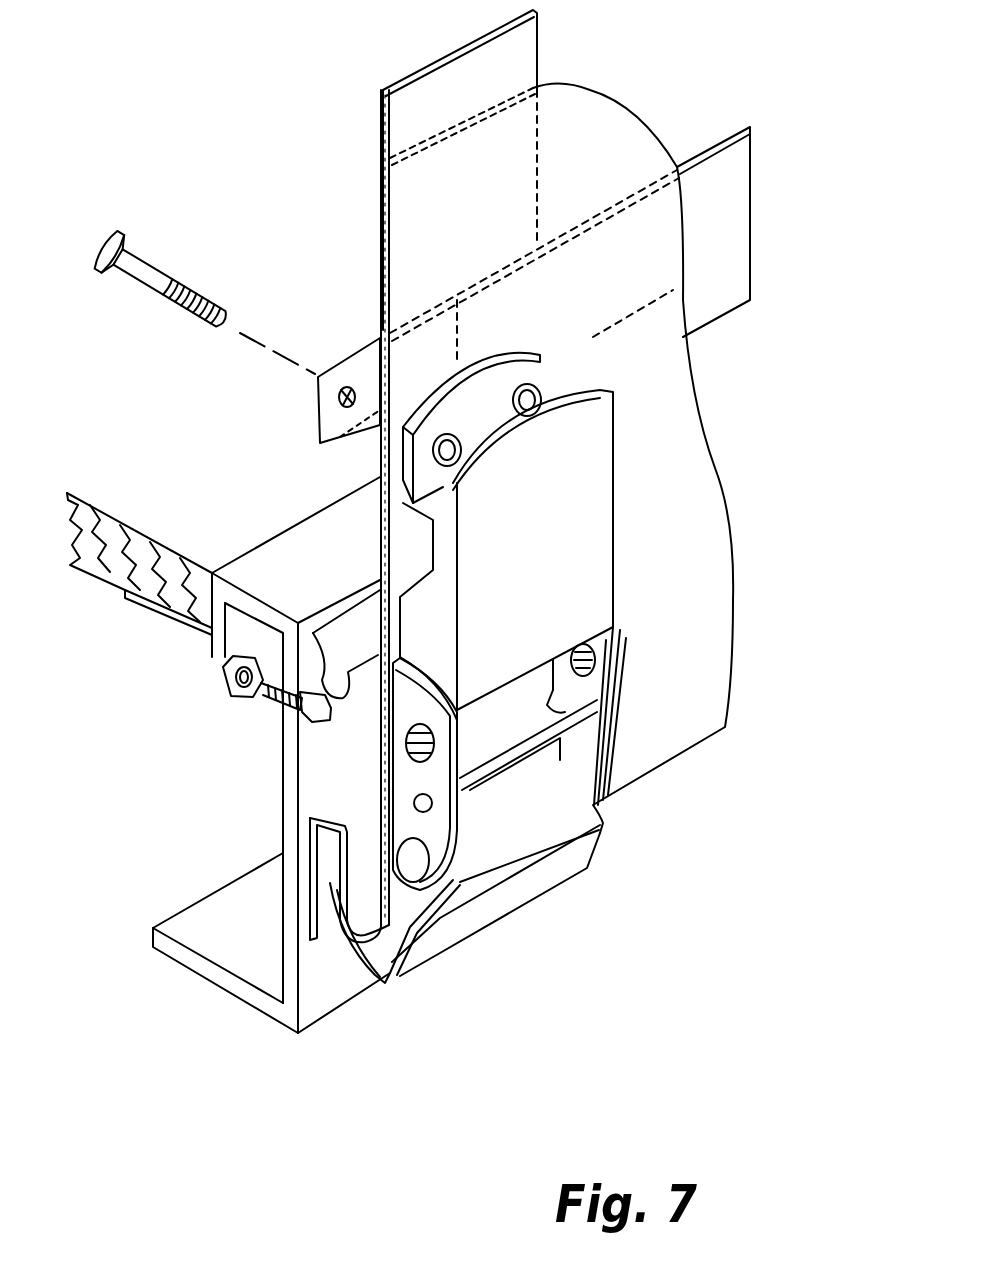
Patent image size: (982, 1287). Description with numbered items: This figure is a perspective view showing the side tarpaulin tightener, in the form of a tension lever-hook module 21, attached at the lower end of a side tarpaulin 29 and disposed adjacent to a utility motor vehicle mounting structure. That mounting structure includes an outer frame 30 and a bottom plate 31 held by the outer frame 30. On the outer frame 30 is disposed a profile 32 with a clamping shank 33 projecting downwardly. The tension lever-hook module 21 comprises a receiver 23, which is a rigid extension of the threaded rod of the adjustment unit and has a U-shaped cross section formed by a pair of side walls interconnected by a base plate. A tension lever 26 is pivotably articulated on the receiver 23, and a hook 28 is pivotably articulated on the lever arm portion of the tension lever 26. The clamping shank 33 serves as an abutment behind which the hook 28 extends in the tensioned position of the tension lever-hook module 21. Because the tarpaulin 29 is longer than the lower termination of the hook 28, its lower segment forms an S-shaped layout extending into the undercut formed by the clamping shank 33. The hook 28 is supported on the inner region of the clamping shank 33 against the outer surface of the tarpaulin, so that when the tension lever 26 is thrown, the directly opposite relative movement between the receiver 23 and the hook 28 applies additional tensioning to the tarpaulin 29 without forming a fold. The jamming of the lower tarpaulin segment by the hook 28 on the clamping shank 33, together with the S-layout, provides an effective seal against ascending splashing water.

The tension lever-hook module 21 is at (630, 762).
The receiver 23 is at (443, 777).
The tension lever 26 is at (577, 523).
The hook 28 is at (467, 928).
The side tarpaulin 29 is at (685, 512).
The outer frame 30 is at (203, 660).
The bottom plate 31 is at (187, 513).
The profile 32 is at (297, 767).
The clamping shank 33 is at (360, 868).